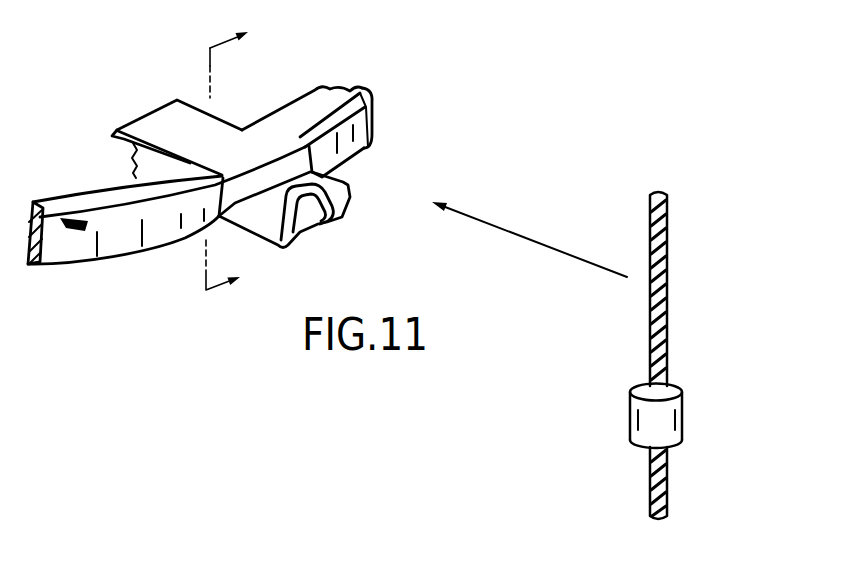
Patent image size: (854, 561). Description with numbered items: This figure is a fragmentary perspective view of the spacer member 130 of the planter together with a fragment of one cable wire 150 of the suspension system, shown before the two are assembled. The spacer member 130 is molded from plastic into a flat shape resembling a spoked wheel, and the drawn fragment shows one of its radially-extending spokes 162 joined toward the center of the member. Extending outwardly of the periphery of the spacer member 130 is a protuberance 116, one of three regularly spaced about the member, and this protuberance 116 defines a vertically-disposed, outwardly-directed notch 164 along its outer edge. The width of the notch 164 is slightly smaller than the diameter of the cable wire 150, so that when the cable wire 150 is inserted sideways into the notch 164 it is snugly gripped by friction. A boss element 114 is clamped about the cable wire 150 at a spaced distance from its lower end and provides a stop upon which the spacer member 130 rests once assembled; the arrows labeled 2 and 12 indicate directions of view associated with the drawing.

The spoke 162 is at (172, 116).
The spacer member 130 is at (333, 105).
The protuberance 116 is at (335, 192).
The notch 164 is at (325, 222).
The cable wire 150 is at (665, 278).
The boss element 114 is at (681, 418).
The first direction arrow 2 is at (217, 65).
The second direction arrow 12 is at (222, 279).